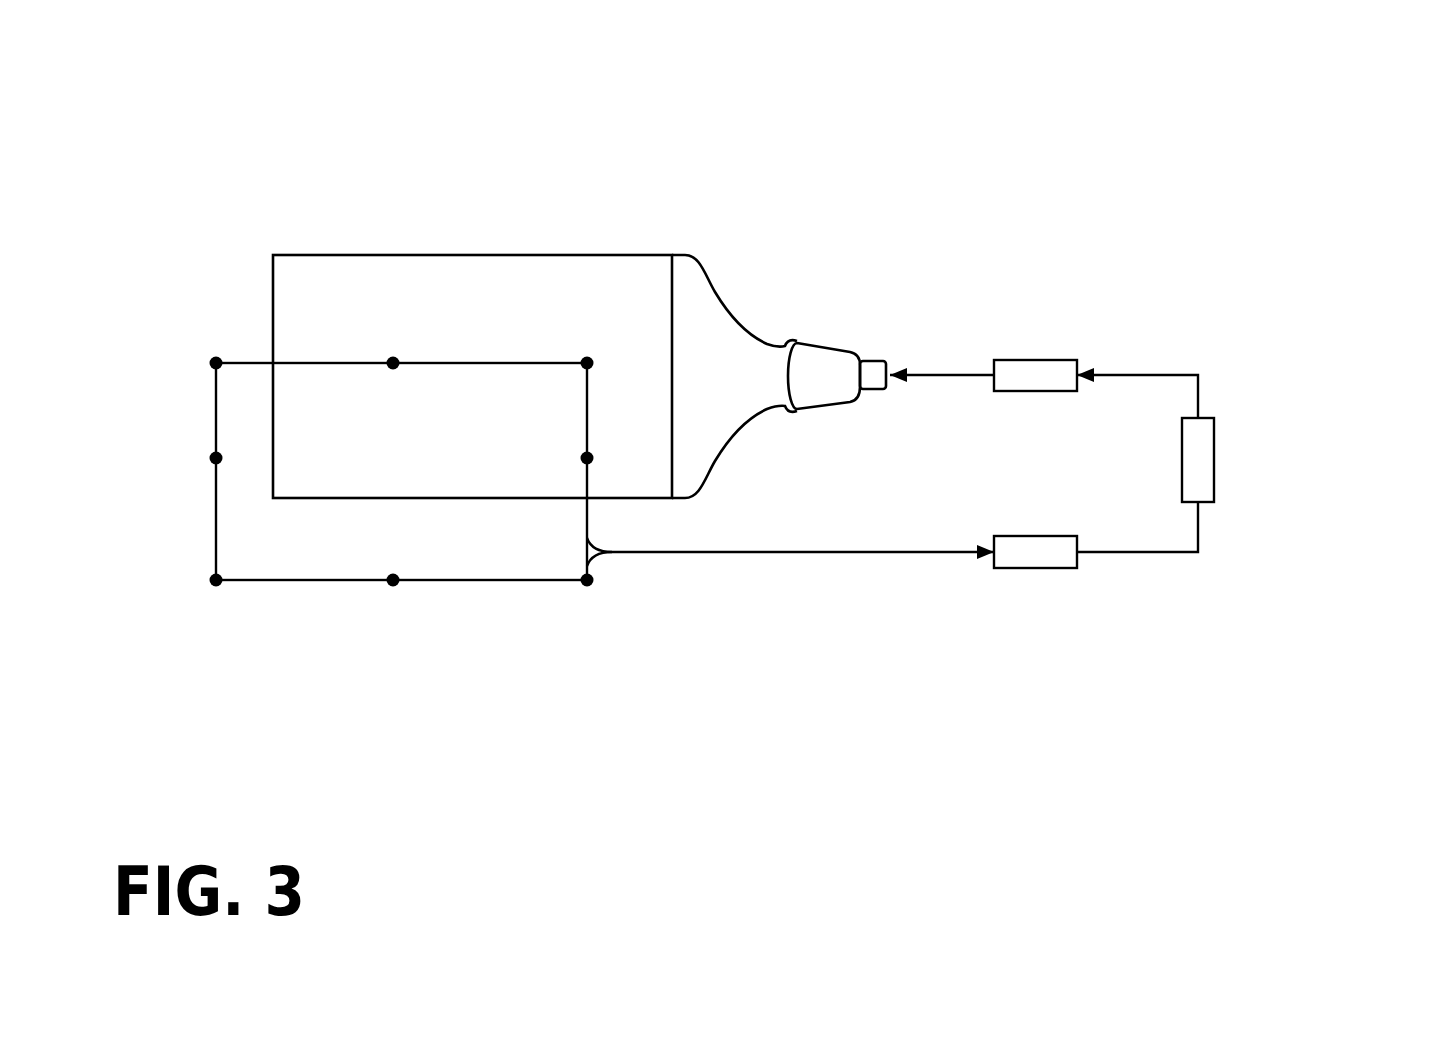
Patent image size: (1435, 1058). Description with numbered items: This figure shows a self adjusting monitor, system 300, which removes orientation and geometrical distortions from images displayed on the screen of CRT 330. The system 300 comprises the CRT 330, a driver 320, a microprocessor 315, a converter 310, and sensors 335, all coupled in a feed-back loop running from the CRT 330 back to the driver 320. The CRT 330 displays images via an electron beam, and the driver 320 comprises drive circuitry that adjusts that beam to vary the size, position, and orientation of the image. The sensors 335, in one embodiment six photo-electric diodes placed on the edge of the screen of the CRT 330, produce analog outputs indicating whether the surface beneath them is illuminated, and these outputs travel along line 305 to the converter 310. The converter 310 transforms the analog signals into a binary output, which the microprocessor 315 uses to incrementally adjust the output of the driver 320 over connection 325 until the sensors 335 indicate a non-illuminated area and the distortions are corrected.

The system 300 is at (283, 98).
The line 305 is at (735, 554).
The converter 310 is at (1042, 568).
The microprocessor 315 is at (1214, 457).
The driver 320 is at (1037, 360).
The wire/connection 325 is at (1199, 392).
The cathode ray tube 330 is at (556, 253).
The sensors 335 is at (204, 386).